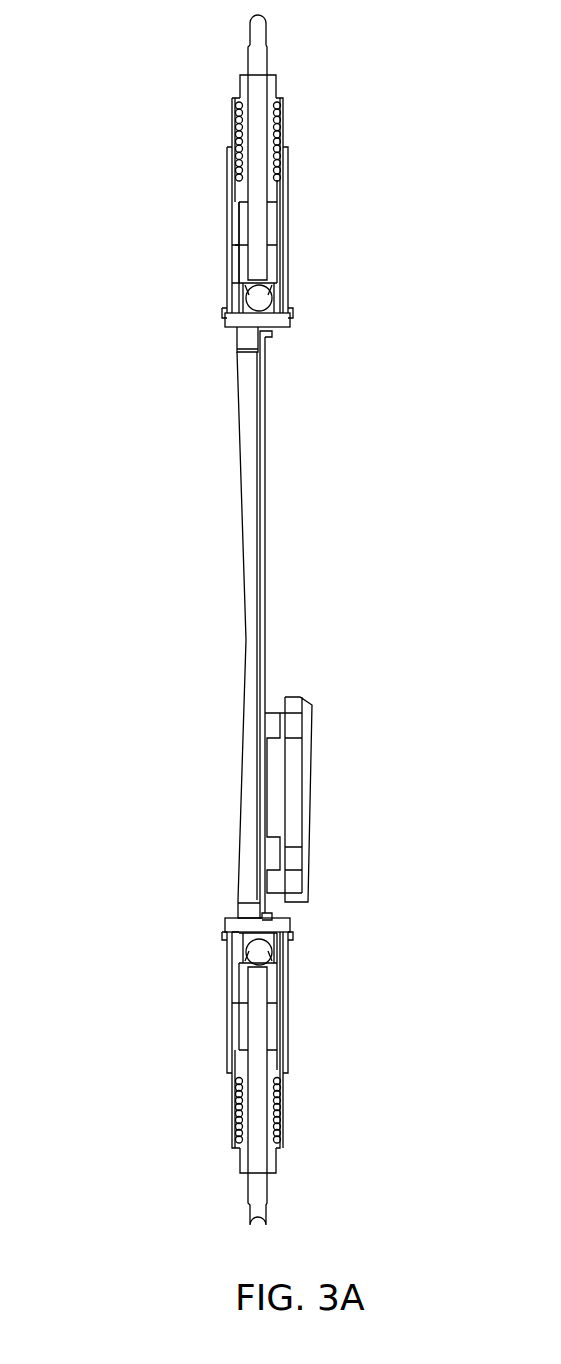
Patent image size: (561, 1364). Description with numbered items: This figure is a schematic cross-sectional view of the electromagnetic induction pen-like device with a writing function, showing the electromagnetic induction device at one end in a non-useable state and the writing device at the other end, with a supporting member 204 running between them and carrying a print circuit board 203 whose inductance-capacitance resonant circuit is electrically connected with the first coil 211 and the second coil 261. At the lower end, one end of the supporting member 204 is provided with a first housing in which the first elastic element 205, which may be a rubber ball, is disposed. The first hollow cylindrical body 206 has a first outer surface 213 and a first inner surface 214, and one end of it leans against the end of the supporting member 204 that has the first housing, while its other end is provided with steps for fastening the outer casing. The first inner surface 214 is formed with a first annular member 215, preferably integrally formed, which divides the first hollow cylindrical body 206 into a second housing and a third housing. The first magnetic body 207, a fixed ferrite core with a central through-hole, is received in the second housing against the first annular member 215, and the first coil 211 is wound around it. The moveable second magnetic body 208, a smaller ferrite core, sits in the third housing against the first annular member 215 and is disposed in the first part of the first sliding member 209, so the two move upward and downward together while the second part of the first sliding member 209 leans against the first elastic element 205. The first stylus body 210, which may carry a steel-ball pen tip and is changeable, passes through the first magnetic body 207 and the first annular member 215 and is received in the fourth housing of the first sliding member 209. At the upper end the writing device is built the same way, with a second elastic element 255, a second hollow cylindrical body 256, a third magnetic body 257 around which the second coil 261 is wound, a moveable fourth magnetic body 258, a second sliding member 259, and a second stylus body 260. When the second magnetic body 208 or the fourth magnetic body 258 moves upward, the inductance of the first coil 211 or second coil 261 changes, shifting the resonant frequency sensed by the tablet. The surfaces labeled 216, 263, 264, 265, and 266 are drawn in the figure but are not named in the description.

The print circuit board 203 is at (262, 603).
The supporting member 204 is at (252, 635).
The first elastic element 205 is at (263, 952).
The first hollow cylindrical body 206 is at (288, 948).
The first magnetic body 207 is at (272, 1155).
The second magnetic body 208 is at (243, 1028).
The first sliding member 209 is at (243, 992).
The first stylus body 210 is at (262, 1192).
The first coil 211 is at (240, 1105).
The first outer surface 213 is at (290, 970).
The first inner surface 214 is at (290, 997).
The first annular member 215 is at (285, 1043).
The housing wall lower portion 216 is at (287, 1103).
The second elastic element 255 is at (257, 300).
The second hollow cylindrical body 256 is at (285, 298).
The third magnetic body 257 is at (243, 84).
The fourth magnetic body 258 is at (243, 232).
The second sliding member 259 is at (243, 275).
The second stylus body 260 is at (260, 34).
The second coil 261 is at (236, 122).
The outer wall (upper right) 263 is at (287, 262).
The housing wall lower portion (upper right) 264 is at (282, 240).
The sleeve wall (upper right) 265 is at (272, 200).
The housing wall upper portion (upper right) 266 is at (286, 147).